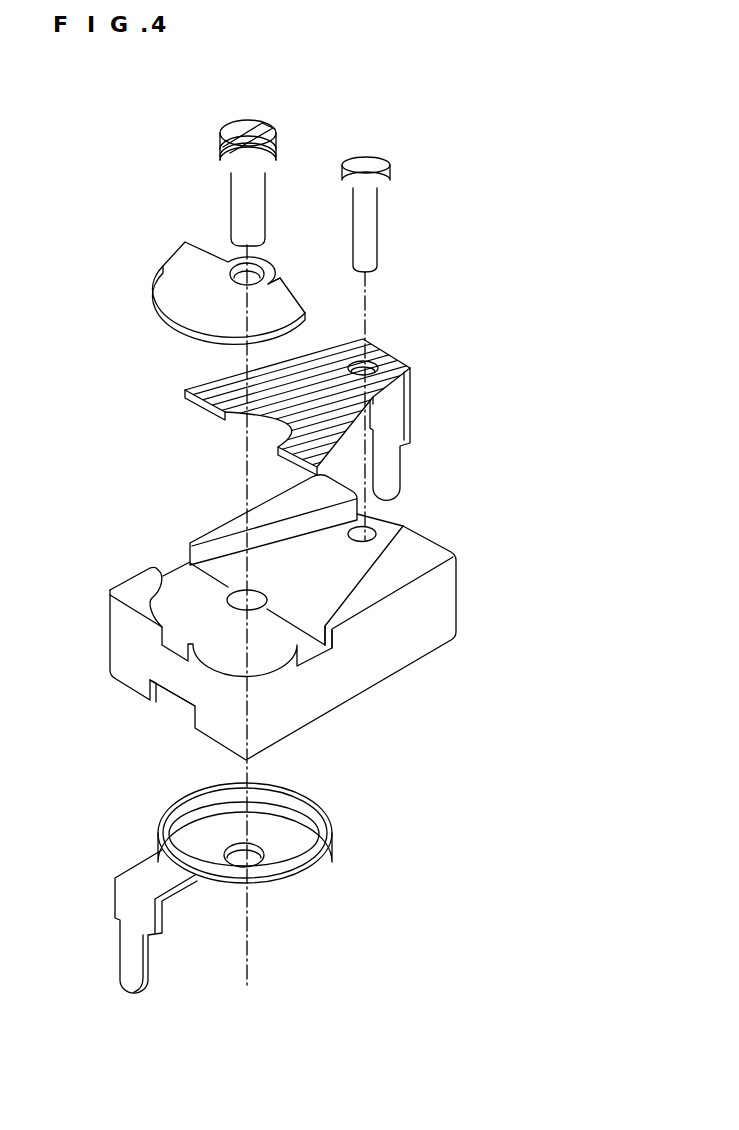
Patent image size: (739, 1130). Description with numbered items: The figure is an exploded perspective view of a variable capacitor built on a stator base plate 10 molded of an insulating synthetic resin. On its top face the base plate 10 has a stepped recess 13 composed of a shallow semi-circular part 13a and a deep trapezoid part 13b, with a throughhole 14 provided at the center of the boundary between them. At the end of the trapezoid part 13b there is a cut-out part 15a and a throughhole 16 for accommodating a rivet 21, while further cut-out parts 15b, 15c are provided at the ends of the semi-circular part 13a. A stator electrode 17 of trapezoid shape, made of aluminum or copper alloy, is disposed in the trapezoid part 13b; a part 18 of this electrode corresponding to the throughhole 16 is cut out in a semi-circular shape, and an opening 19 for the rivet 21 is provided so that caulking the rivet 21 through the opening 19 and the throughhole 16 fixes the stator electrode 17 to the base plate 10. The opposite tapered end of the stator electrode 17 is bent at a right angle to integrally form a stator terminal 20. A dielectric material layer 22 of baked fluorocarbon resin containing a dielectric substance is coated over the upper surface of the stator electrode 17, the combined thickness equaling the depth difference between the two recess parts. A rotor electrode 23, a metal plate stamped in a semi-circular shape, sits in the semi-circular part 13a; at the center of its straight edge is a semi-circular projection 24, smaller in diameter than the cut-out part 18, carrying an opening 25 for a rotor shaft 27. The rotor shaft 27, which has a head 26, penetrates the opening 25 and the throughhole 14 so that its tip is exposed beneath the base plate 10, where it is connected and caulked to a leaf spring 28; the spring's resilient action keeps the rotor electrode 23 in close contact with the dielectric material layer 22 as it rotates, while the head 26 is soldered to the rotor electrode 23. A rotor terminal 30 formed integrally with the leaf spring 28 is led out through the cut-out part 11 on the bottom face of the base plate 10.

The stator base plate 10 is at (284, 617).
The cut-out part 11 is at (162, 698).
The stepped recess 13 is at (270, 553).
The semi-circular part 13a is at (182, 633).
The trapezoid part 13b is at (455, 637).
The throughhole 14 is at (255, 607).
The cut-out part 15a is at (405, 526).
The cut-out part 15b is at (190, 562).
The cut-out part 15c is at (330, 648).
The throughhole 16 is at (370, 528).
The stator electrode 17 is at (311, 408).
The cut-out part 18 is at (236, 408).
The opening 19 is at (373, 363).
The stator terminal 20 is at (407, 417).
The rivet 21 is at (370, 233).
The dielectric material layer 22 is at (229, 387).
The rotor electrode 23 is at (232, 286).
The semi-circular projection 24 is at (273, 288).
The opening 25 is at (258, 262).
The head 26 is at (243, 121).
The rotor shaft 27 is at (257, 200).
The leaf spring 28 is at (251, 888).
The rotor terminal 30 is at (137, 952).